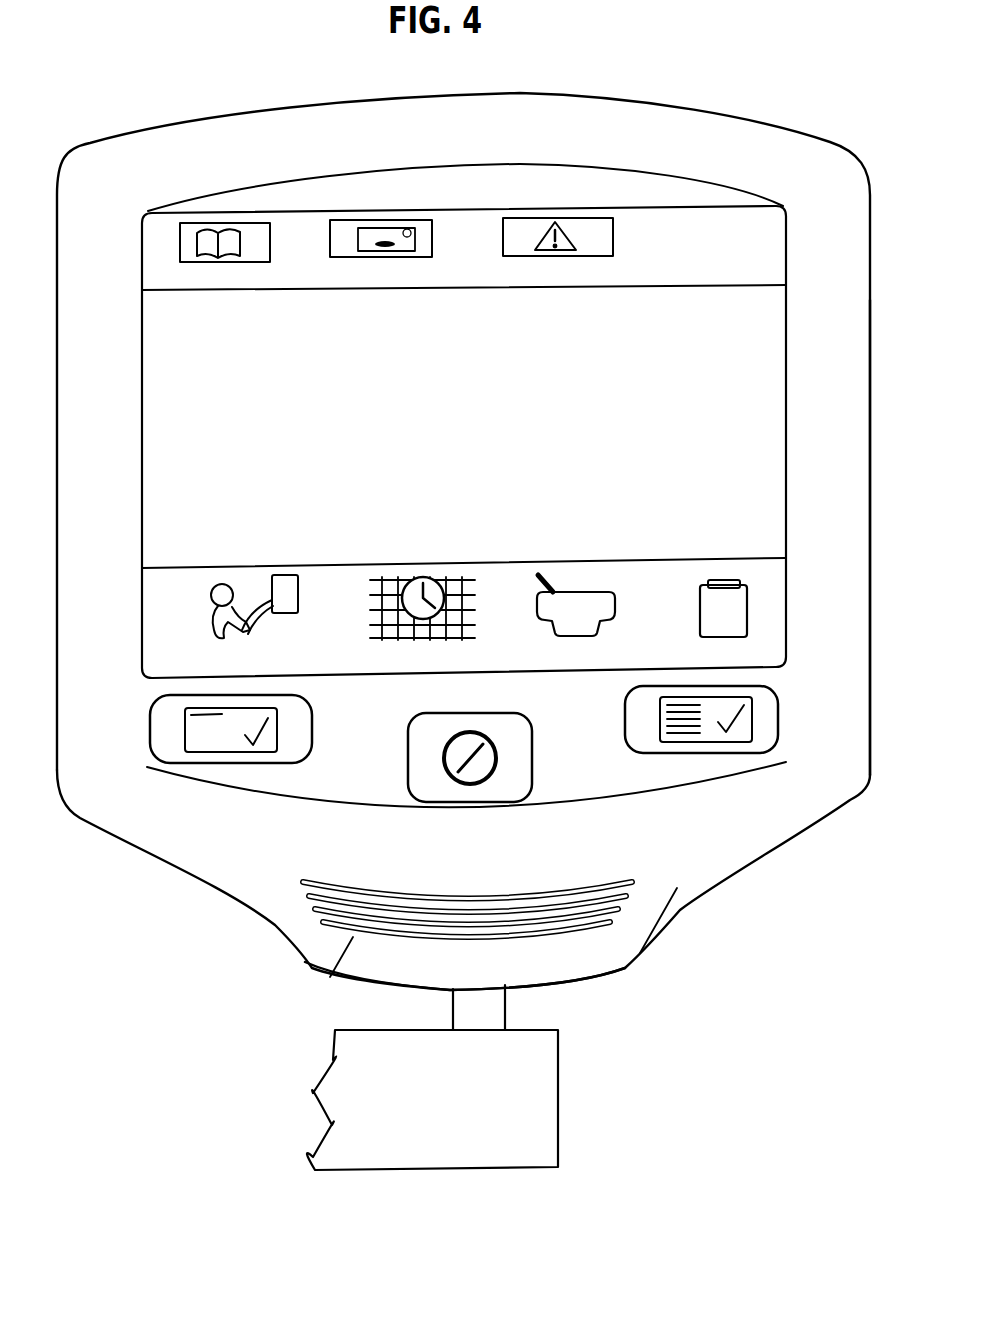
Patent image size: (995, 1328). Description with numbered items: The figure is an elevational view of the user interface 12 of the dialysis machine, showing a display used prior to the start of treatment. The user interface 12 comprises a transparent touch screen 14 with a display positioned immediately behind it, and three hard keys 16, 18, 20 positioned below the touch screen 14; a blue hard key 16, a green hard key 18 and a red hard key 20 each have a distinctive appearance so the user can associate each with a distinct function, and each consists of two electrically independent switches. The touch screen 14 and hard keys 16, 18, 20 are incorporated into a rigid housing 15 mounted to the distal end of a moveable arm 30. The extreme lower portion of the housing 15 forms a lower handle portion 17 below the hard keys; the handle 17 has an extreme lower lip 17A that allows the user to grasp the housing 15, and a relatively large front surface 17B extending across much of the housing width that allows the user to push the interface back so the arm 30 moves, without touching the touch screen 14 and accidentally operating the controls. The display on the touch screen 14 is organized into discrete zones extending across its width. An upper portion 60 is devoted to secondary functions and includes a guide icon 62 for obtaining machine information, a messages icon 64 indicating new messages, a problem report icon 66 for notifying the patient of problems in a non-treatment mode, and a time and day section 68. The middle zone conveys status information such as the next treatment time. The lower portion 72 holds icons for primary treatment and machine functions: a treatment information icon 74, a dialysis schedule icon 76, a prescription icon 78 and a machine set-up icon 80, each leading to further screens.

The user interface 12 is at (788, 125).
The touch screen 14 is at (770, 397).
The housing 15 is at (858, 521).
The blue hard key 16 is at (215, 755).
The lower handle portion 17 is at (622, 946).
The lower lip 17A is at (623, 972).
The front surface 17B is at (330, 976).
The green hard key 18 is at (765, 740).
The red hard key 20 is at (418, 770).
The moveable arm 30 is at (553, 1112).
The upper portion 60 is at (166, 222).
The guide icon 62 is at (304, 232).
The messages icon 64 is at (448, 250).
The problem report icon 66 is at (626, 250).
The time and day section 68 is at (664, 225).
The lower portion 72 is at (120, 562).
The treatment information icon 74 is at (150, 620).
The dialysis schedule icon 76 is at (386, 690).
The prescription icon 78 is at (590, 560).
The machine set-up icon 80 is at (723, 550).